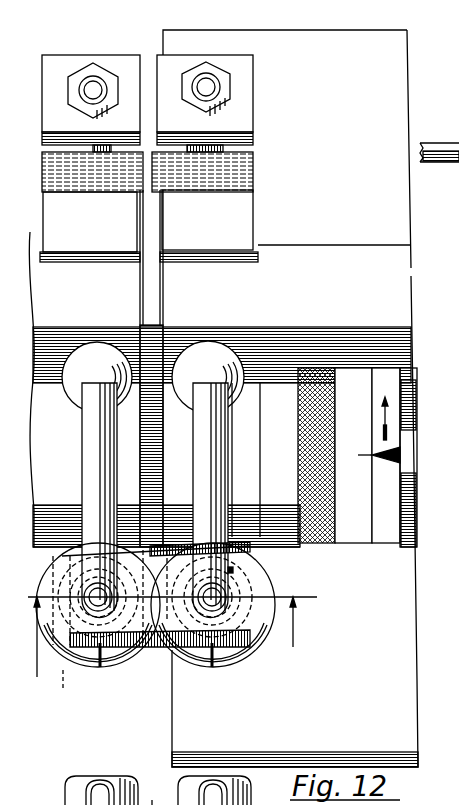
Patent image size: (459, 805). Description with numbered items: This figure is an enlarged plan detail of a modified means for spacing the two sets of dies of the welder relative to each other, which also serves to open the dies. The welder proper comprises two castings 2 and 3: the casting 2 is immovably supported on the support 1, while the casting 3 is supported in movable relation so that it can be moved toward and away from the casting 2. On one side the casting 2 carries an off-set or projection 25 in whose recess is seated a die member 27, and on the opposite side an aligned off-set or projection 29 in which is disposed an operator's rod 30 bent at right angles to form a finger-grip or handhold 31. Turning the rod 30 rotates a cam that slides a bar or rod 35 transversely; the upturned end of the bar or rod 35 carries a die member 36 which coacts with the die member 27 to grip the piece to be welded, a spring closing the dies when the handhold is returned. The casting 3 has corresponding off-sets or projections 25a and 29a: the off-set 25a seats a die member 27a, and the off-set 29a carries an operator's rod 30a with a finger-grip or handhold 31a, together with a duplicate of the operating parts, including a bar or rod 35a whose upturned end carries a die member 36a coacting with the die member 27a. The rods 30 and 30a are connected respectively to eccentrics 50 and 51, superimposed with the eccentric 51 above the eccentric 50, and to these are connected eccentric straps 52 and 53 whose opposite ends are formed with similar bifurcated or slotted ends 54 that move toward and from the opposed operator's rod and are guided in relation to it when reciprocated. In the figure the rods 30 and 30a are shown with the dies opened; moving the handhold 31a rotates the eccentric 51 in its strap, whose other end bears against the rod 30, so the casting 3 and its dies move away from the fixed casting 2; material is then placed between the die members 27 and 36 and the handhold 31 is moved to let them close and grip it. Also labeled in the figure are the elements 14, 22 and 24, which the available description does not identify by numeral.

The support 1 is at (388, 52).
The casting 2 is at (323, 258).
The casting 3 is at (43, 230).
The die member 36a is at (52, 66).
The bar or rod 35a is at (93, 88).
The die member 36 is at (240, 63).
The bar or rod 35 is at (206, 82).
The die member 27a is at (83, 178).
The die member 27 is at (240, 166).
The off-set or projection 25a is at (88, 245).
The off-set or projection 25 is at (235, 228).
The knurled sleeve 22 is at (318, 380).
The index pointer 24 is at (402, 378).
The finger-grip or handhold 31a is at (87, 467).
The finger-grip or handhold 31 is at (202, 477).
The eccentric strap 52 is at (253, 567).
The eccentric 51 is at (65, 573).
The eccentric 50 is at (247, 572).
The distance 14 is at (315, 664).
The off-set or projection 29a is at (88, 663).
The off-set or projection 29 is at (193, 690).
The operator's rod 30a is at (120, 622).
The operator's rod 30 is at (217, 613).
The bifurcated or slotted ends 54 is at (63, 677).
The eccentric strap 53 is at (152, 797).